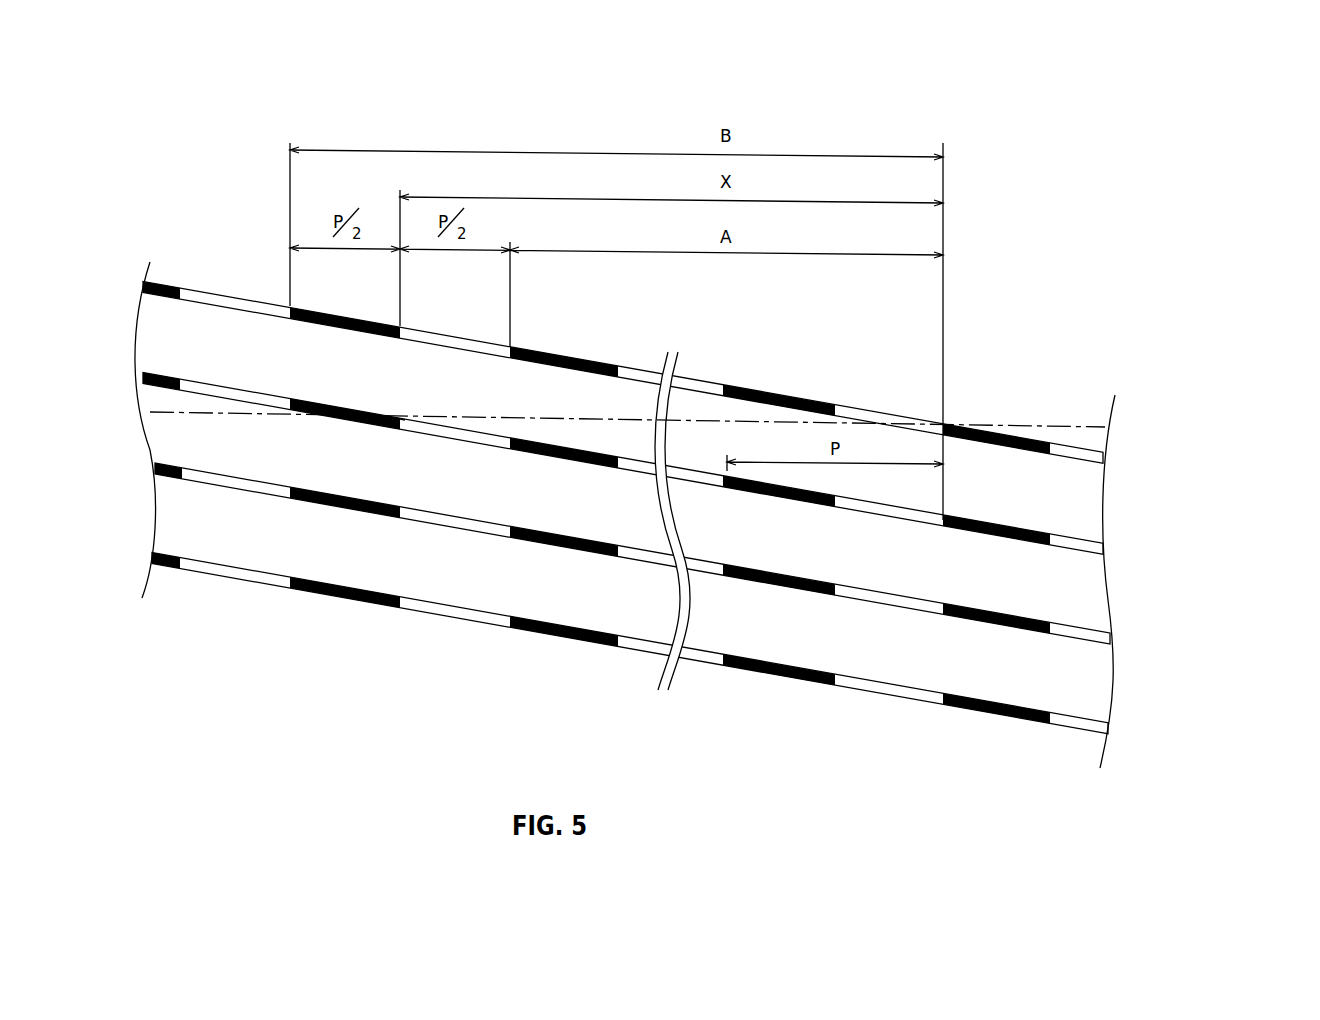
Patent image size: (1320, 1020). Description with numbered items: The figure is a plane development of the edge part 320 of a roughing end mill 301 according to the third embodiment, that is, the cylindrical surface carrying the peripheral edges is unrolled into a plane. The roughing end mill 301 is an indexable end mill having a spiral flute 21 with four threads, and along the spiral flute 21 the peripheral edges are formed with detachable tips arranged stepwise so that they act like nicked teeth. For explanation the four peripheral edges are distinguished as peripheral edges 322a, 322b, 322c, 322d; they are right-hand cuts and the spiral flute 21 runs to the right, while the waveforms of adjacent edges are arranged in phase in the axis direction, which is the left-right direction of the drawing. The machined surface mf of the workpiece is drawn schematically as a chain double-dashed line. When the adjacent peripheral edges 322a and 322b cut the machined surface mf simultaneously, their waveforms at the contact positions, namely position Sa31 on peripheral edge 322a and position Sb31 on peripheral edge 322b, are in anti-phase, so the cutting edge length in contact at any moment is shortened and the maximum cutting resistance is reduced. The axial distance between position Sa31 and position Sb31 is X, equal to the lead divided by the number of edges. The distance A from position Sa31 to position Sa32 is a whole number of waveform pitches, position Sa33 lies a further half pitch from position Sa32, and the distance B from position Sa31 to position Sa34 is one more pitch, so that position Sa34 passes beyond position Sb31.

The roughing end mill 301 is at (1202, 159).
The edge part 320 is at (1095, 254).
The peripheral edge 322a is at (1102, 460).
The peripheral edge 322b is at (1102, 550).
The peripheral edge 322c is at (1110, 642).
The peripheral edge 322d is at (1107, 733).
The spiral flute 21 is at (170, 510).
The machined surface mf is at (1053, 424).
The position Sa31 is at (943, 424).
The position Sa32 is at (510, 347).
The position Sa33 is at (400, 326).
The position Sa34 is at (290, 306).
The position Sb31 is at (400, 419).